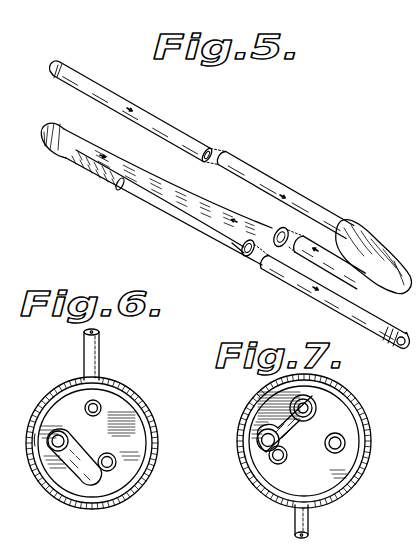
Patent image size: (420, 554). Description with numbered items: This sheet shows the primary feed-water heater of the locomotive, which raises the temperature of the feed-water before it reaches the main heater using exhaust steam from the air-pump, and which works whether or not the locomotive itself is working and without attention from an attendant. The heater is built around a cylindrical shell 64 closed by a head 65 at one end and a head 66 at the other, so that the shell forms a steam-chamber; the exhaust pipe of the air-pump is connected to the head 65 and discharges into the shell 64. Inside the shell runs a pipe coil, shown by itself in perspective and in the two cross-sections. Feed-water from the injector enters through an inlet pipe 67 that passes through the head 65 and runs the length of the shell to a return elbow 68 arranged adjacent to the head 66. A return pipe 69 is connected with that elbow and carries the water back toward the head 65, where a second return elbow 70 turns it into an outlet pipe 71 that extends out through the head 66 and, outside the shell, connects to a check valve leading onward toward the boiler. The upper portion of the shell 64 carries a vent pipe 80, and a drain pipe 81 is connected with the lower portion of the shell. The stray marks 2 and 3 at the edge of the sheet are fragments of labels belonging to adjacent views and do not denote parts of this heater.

In FIG. 5, the sheet fragment 2 is at (6, 143).
In FIG. 5, the sheet fragment 3 is at (2, 217).
In FIG. 6, the cylindrical shell 64 is at (76, 387).
In FIG. 7, the cylindrical shell 64 is at (258, 396).
In FIG. 6, the head 65 is at (128, 420).
In FIG. 7, the head 66 is at (325, 480).
In FIG. 5, the inlet pipe 67 is at (230, 156).
In FIG. 6, the inlet pipe 67 is at (101, 405).
In FIG. 7, the inlet pipe 67 is at (318, 404).
In FIG. 5, the return elbow 68 is at (373, 244).
In FIG. 7, the return elbow 68 is at (260, 428).
In FIG. 5, the return pipe 69 is at (181, 188).
In FIG. 6, the return pipe 69 is at (116, 466).
In FIG. 7, the return pipe 69 is at (268, 462).
In FIG. 5, the return elbow 70 is at (70, 173).
In FIG. 6, the return elbow 70 is at (53, 465).
In FIG. 5, the outlet pipe 71 is at (262, 259).
In FIG. 6, the outlet pipe 71 is at (34, 440).
In FIG. 7, the outlet pipe 71 is at (345, 450).
In FIG. 6, the vent pipe 80 is at (100, 349).
In FIG. 7, the drain pipe 81 is at (294, 520).